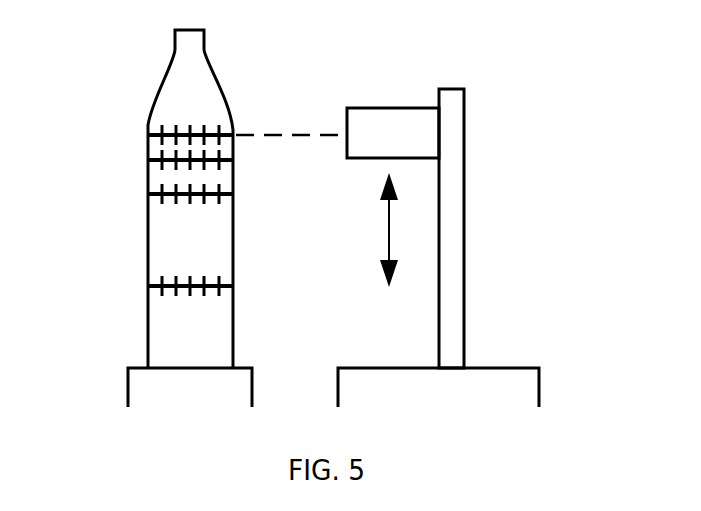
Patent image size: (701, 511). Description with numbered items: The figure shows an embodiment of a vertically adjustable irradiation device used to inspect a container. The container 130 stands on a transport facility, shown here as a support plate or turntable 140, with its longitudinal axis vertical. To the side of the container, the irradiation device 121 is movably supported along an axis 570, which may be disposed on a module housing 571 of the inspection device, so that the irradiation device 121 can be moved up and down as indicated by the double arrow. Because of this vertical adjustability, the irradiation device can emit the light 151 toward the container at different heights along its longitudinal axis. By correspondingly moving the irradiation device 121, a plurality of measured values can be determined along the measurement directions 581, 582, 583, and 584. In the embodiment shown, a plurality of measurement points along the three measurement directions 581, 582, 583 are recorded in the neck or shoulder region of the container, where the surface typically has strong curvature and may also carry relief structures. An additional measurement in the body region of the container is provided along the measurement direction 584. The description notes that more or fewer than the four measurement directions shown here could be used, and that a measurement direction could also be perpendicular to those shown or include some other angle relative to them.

The irradiation device 121 is at (385, 108).
The container 130 is at (148, 229).
The turntable 140 is at (128, 380).
The light 151 is at (288, 135).
The axis 570 is at (464, 196).
The module housing 571 is at (503, 368).
The measurement direction 581 is at (157, 135).
The measurement direction 582 is at (157, 160).
The measurement direction 583 is at (157, 194).
The measurement direction 584 is at (157, 286).